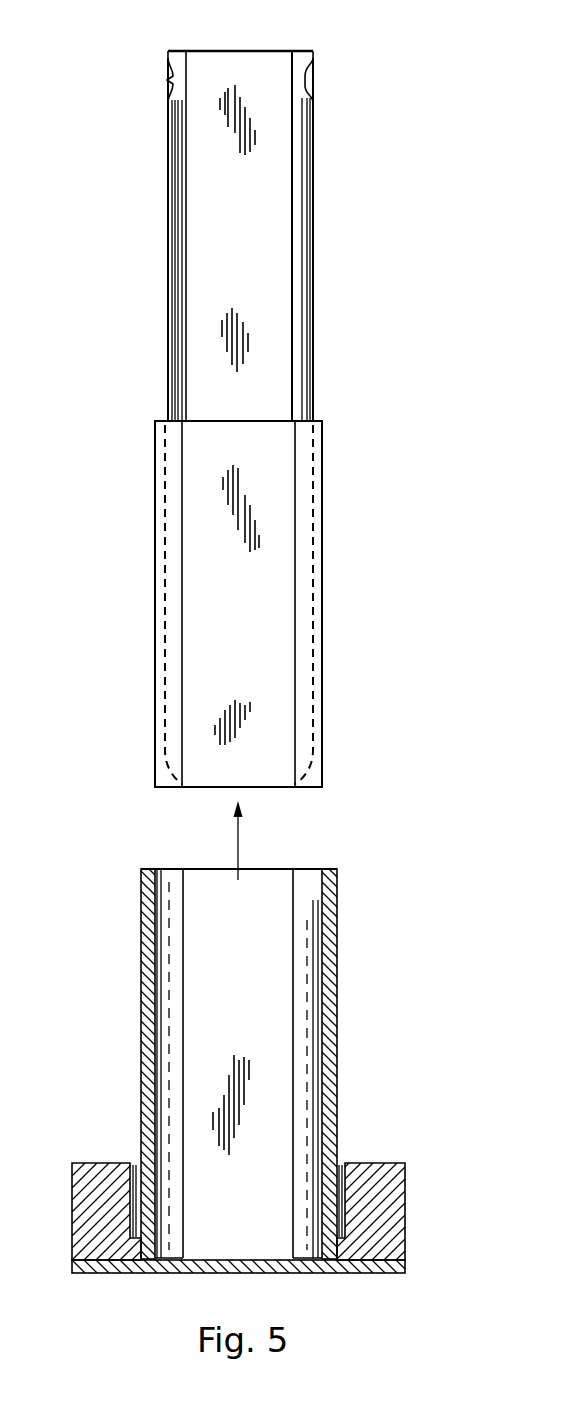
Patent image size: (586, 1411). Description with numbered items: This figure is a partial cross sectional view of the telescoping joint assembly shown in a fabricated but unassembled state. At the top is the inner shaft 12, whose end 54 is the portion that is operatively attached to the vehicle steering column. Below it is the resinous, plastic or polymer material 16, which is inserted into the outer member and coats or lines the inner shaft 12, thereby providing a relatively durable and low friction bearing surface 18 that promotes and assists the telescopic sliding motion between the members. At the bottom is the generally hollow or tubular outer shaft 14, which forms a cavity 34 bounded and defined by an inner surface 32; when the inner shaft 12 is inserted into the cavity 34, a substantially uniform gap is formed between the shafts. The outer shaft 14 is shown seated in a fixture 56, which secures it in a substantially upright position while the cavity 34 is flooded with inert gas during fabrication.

The inner shaft 12 is at (260, 249).
The end of inner member 54 is at (236, 50).
The low friction bearing surface 18 is at (222, 621).
The polymer material 16 is at (313, 632).
The outer shaft 14 is at (337, 996).
The inner surface 32 is at (318, 893).
The cavity 34 is at (222, 966).
The fixture 56 is at (348, 1274).